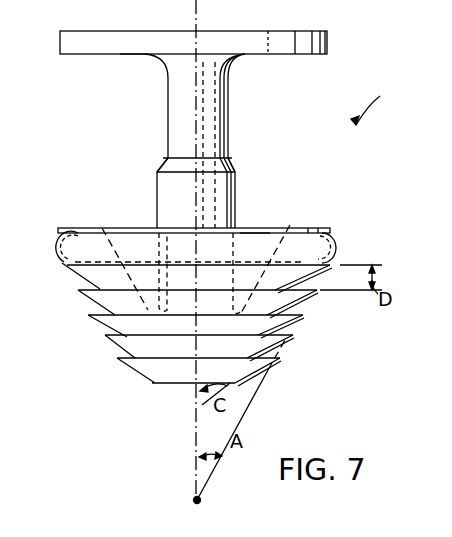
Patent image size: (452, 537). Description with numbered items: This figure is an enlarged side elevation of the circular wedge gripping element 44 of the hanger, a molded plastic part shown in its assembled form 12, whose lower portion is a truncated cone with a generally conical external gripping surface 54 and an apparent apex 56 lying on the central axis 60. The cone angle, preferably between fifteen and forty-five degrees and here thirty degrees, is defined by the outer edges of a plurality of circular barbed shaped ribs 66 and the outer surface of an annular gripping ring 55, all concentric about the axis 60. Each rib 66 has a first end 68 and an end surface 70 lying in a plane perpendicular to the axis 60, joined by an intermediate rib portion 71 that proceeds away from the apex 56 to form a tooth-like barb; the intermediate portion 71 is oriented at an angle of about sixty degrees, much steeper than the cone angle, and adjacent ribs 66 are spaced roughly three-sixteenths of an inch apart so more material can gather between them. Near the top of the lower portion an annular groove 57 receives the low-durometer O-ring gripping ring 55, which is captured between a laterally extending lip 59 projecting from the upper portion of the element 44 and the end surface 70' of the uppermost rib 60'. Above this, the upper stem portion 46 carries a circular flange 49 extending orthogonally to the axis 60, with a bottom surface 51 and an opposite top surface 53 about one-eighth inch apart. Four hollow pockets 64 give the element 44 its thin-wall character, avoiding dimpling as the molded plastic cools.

The sealing closure assembly 12 is at (378, 101).
The gripping element 44 is at (330, 230).
The upper stem portion 46 is at (228, 100).
The flange 49 is at (285, 31).
The bottom surface 51 is at (124, 56).
The top surface 53 is at (108, 31).
The conical external gripping surface 54 is at (92, 303).
The annular gripping ring 55 is at (336, 248).
The apparent apex 56 is at (202, 500).
The annular groove 57 is at (60, 240).
The lip 59 is at (254, 232).
The central axis 60 is at (172, 250).
The uppermost rib 60' is at (193, 258).
The hollow pockets 64 is at (233, 272).
The circular barbed shaped ribs 66 is at (300, 300).
The first end 68 is at (100, 316).
The end surface 70 is at (167, 299).
The end surface of the uppermost rib 70' is at (169, 273).
The intermediate rib portion 71 is at (118, 357).